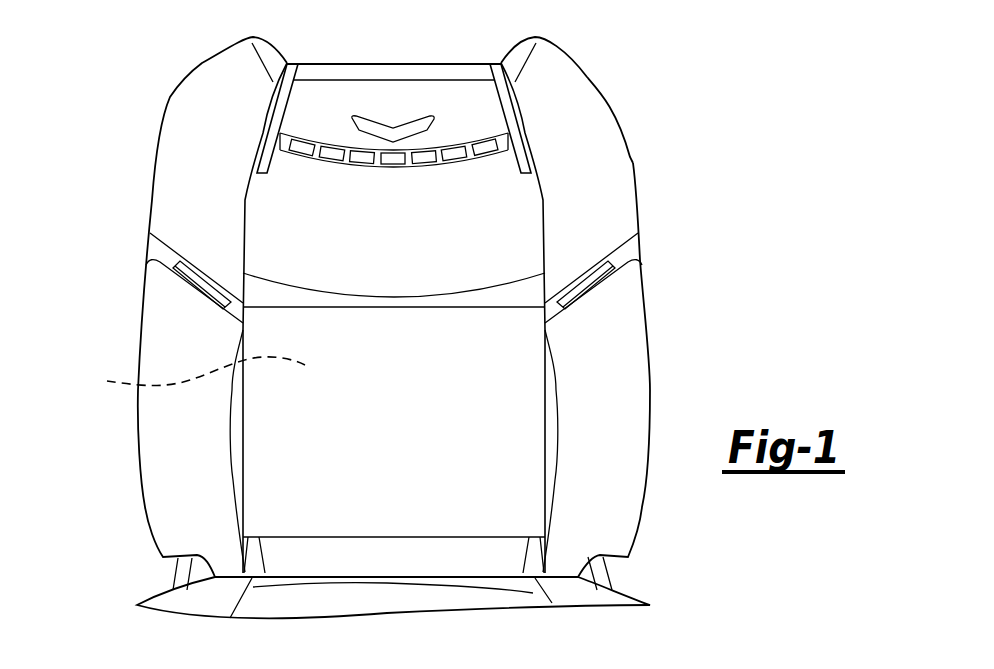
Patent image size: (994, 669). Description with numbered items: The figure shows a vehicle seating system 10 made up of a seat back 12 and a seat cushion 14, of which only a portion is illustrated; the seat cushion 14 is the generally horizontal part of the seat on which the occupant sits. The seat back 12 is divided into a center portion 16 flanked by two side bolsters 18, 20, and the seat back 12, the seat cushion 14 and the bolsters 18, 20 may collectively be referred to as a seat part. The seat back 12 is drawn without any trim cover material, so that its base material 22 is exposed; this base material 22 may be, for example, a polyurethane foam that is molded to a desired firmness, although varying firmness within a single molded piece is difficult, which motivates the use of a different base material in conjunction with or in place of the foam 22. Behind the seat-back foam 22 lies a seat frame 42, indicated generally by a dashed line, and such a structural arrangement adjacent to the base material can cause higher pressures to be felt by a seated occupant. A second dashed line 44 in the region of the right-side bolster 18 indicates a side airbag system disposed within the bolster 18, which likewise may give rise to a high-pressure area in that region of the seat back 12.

The seating system 10 is at (400, 309).
The seat back 12 is at (385, 295).
The seat cushion 14 is at (140, 595).
The center portion 16 is at (443, 62).
The side bolster 18 is at (196, 295).
The side bolster 20 is at (560, 50).
The base material 22 is at (634, 163).
The seat frame 42 is at (193, 376).
The side airbag system 44 is at (203, 112).